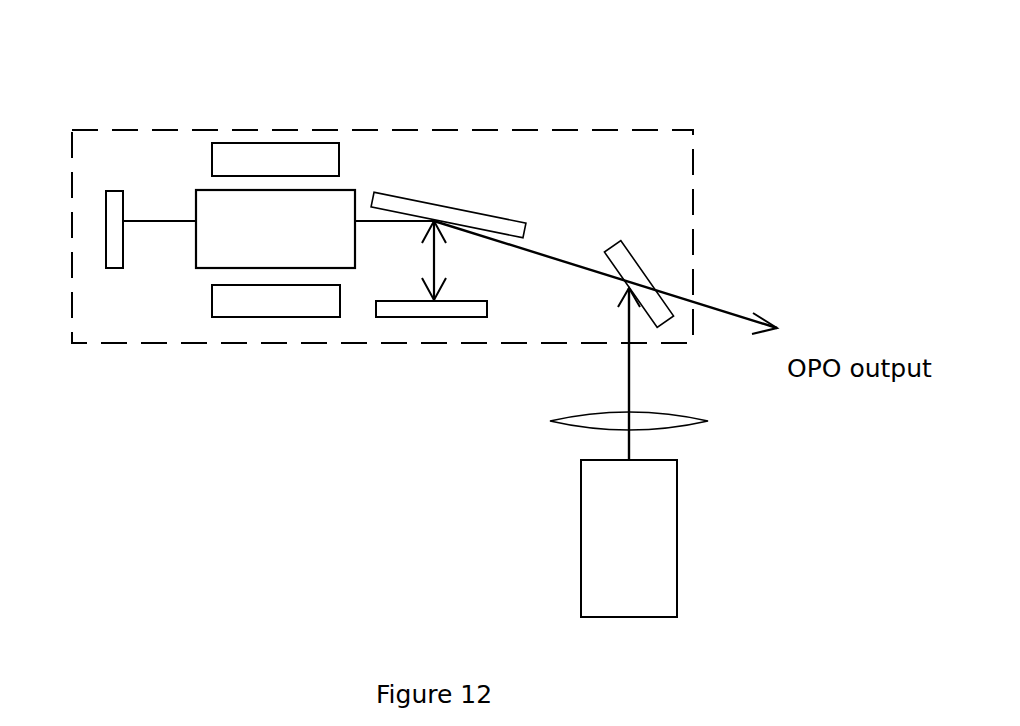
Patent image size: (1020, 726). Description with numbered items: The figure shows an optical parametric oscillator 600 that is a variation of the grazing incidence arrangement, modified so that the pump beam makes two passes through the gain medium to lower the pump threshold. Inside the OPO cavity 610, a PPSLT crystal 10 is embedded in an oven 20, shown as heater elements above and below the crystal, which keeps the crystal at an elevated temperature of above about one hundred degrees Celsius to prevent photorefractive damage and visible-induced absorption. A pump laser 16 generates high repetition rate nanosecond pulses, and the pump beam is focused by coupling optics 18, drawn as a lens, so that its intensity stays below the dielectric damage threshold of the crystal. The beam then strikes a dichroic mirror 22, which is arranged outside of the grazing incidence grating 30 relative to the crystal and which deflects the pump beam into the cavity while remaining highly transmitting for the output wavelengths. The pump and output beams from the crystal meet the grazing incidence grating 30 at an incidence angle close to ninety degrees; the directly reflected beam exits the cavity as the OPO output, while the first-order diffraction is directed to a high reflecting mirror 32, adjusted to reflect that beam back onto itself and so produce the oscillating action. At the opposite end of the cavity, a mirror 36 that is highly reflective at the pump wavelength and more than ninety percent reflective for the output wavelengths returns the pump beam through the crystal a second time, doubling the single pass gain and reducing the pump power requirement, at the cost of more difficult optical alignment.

The optical parametric oscillator 600 is at (392, 97).
The OPO cavity 610 is at (643, 127).
The PPSLT crystal 10 is at (208, 260).
The oven 20 is at (282, 155).
The mirror 36 is at (110, 248).
The grazing incidence grating 30 is at (482, 218).
The high reflecting mirror 32 is at (397, 310).
The dichroic mirror 22 is at (632, 272).
The coupling optics 18 is at (708, 421).
The pump laser 16 is at (677, 540).